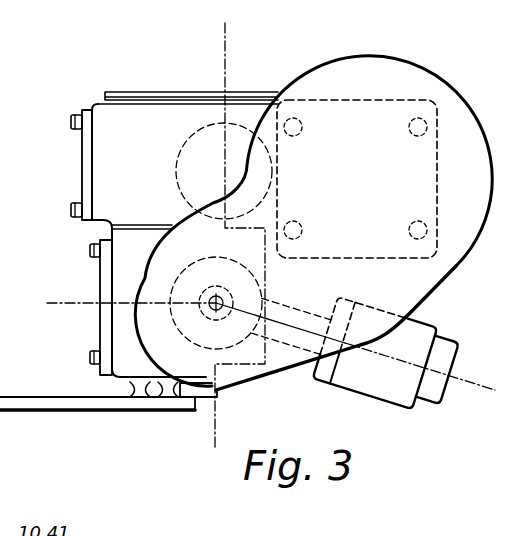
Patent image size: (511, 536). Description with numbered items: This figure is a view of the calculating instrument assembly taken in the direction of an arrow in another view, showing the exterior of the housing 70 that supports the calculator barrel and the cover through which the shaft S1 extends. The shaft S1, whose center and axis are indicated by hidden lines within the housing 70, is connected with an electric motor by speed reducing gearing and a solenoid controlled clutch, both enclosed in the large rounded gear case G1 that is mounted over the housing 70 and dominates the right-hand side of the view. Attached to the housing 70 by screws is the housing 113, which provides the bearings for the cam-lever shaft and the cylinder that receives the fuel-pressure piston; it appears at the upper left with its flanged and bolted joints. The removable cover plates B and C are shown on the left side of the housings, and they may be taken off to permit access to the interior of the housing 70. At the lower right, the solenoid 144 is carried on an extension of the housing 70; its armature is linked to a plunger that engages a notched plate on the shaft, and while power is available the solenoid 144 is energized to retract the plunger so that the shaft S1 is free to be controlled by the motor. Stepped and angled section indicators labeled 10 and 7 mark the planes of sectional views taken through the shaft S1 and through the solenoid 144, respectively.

The gear case G1 is at (400, 48).
The housing 113 is at (101, 156).
The removable cover plate B is at (81, 193).
The housing 70 is at (123, 331).
The removable cover plate C is at (100, 320).
The shaft S1 is at (241, 257).
The solenoid 144 is at (427, 322).
The section line 10- 10 is at (229, 38).
The section line 7- 7 is at (65, 268).